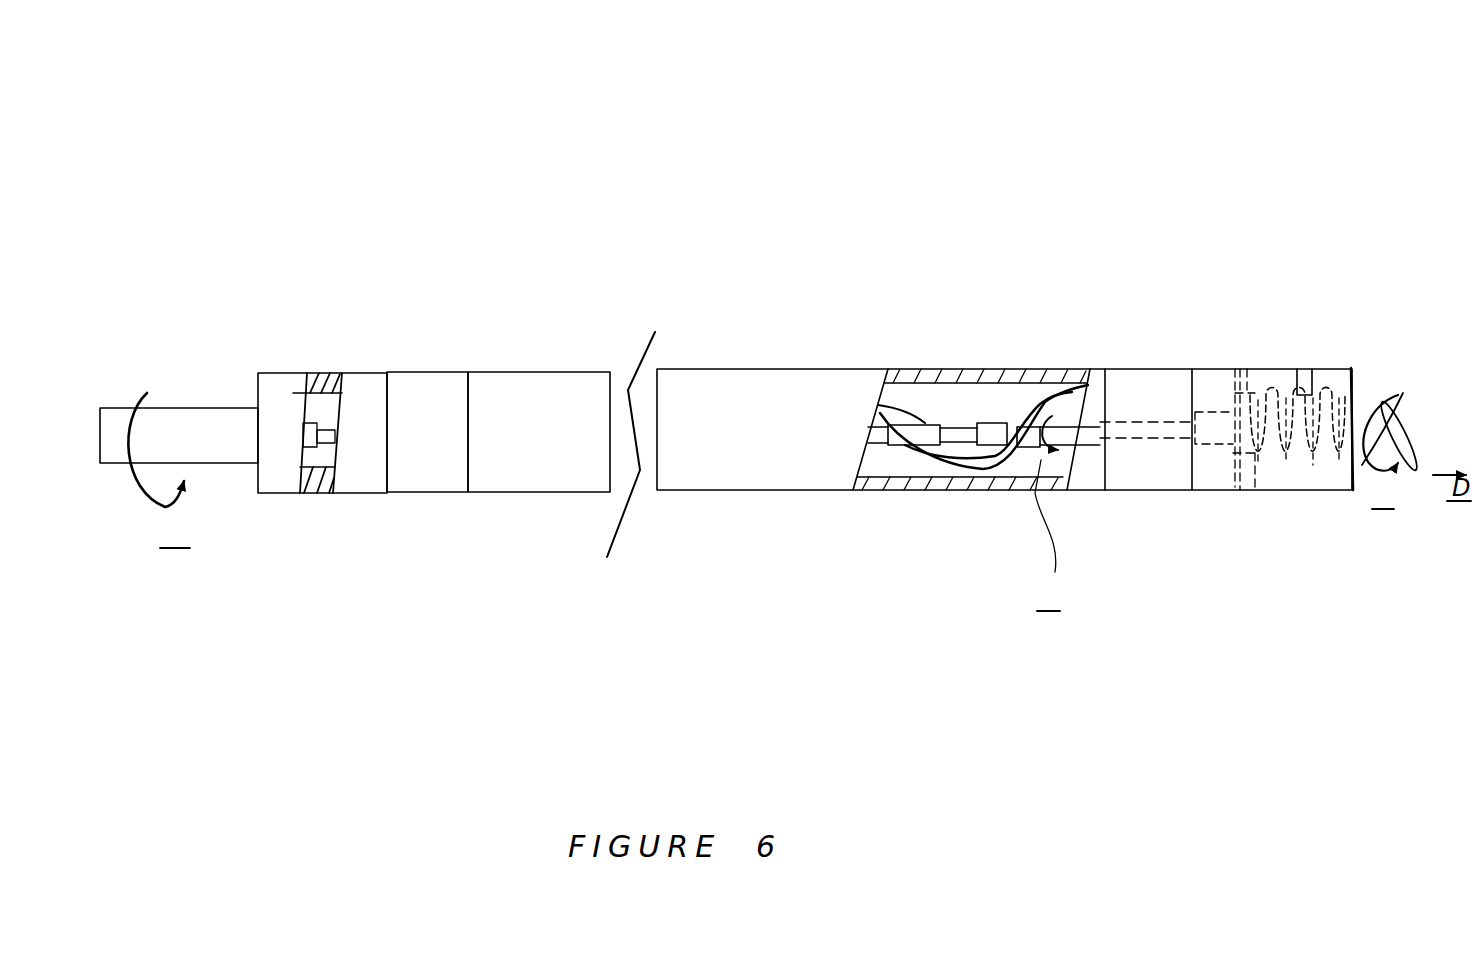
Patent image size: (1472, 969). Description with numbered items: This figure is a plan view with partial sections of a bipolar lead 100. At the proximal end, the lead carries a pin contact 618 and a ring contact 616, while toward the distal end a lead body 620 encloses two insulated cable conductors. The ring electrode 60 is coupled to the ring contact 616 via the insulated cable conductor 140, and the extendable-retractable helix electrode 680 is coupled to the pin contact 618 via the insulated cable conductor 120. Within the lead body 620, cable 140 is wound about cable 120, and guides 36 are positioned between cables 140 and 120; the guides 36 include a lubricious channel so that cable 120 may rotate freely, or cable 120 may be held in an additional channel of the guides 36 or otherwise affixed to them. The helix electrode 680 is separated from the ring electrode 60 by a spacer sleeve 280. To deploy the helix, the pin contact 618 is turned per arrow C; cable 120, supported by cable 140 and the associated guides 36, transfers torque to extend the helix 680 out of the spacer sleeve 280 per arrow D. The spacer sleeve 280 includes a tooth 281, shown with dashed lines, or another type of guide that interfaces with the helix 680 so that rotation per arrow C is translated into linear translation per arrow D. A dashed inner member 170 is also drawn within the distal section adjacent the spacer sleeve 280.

The bipolar lead 100 is at (699, 138).
The pin contact 618 is at (309, 424).
The ring contact 616 is at (418, 382).
The lead body 620 is at (533, 493).
The insulated cable conductor 120 is at (326, 440).
The guides 36 is at (985, 437).
The insulated cable conductor 140 is at (1062, 392).
The ring electrode 60 is at (1143, 385).
The inner shaft 170 is at (1228, 420).
The tooth 281 is at (1320, 367).
The spacer sleeve 280 is at (1272, 475).
The extendable-retractable helix electrode 680 is at (1395, 400).